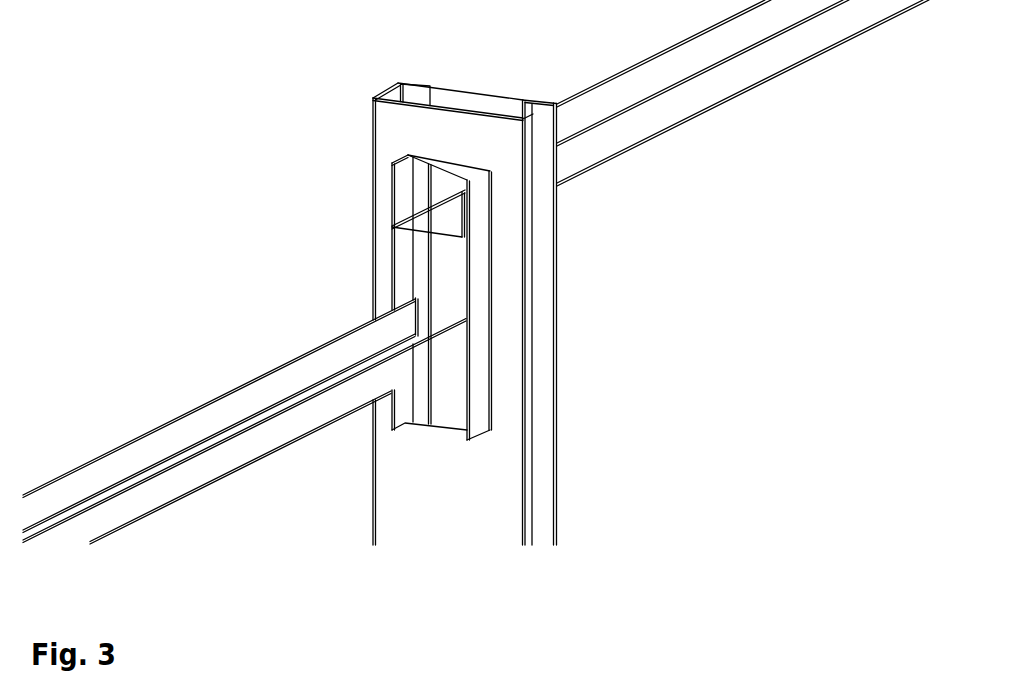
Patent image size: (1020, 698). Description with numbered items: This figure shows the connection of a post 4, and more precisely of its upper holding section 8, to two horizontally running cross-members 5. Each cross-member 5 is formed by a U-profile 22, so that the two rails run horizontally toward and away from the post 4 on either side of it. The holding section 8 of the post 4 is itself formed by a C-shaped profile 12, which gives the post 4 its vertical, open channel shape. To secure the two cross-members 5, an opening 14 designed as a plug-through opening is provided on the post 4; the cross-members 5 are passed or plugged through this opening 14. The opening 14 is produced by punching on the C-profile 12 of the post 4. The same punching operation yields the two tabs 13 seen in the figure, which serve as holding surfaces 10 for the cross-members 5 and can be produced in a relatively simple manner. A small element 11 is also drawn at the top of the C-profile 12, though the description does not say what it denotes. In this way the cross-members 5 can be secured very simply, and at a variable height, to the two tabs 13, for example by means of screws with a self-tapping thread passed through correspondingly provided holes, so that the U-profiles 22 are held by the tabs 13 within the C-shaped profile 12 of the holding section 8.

The post 4 is at (545, 465).
The cross-member 5 is at (153, 498).
The upper holding section 8 is at (545, 278).
The holding surface 10 is at (403, 172).
The tab 11 is at (418, 92).
The C-shaped profile 12 is at (386, 110).
The tab 13 is at (392, 282).
The opening 14 is at (446, 270).
The U-profile 22 is at (149, 447).